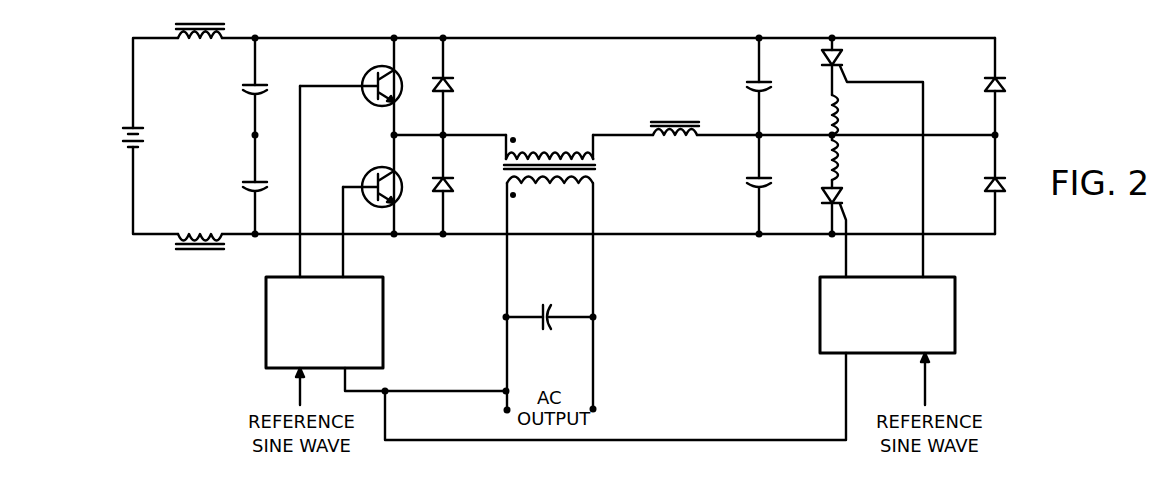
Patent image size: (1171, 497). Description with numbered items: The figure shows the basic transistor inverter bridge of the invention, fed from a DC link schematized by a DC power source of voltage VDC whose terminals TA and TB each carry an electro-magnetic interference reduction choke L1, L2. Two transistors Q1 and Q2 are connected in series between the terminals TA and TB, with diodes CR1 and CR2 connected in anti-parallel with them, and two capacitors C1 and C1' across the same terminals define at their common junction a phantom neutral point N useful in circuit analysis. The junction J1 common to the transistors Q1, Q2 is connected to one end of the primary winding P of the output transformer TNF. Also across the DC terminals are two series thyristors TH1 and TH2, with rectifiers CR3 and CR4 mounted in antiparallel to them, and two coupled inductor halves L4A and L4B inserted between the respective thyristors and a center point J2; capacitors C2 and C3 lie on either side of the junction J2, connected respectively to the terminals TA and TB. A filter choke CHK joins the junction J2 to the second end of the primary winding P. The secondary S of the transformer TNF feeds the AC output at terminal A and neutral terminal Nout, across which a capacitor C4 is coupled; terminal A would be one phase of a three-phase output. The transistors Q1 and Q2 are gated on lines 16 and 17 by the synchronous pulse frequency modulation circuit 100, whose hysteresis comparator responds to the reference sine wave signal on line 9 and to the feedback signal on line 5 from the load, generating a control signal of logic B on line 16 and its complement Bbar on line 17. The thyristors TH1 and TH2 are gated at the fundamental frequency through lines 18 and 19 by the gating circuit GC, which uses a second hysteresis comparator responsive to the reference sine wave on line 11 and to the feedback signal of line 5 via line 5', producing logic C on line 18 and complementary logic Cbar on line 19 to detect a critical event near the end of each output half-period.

The DC link voltage VDC is at (144, 135).
The electro-magnetic interference reduction choke L1 is at (200, 44).
The electro-magnetic interference reduction choke L2 is at (197, 231).
The capacitor C1 is at (236, 78).
The capacitor C1' is at (236, 176).
The DC link terminal TA is at (257, 36).
The DC link terminal TB is at (255, 236).
The phantom neutral point N is at (253, 135).
The transistor Q1 is at (368, 74).
The transistor Q2 is at (374, 174).
The gating line 16 is at (302, 86).
The gating line 17 is at (343, 184).
The control signal logic B is at (312, 101).
The complementary control signal logic B-bar Bbar is at (340, 190).
The junction J1 is at (392, 136).
The diode CR1 is at (451, 83).
The diode CR2 is at (450, 182).
The output transformer TNF is at (594, 170).
The primary winding P is at (545, 146).
The secondary winding S is at (546, 184).
The filter choke CHK is at (672, 139).
The center point J2 is at (757, 134).
The capacitor C2 is at (747, 92).
The capacitor C3 is at (747, 188).
The coupled inductor half L4A is at (826, 120).
The coupled inductor half L4B is at (826, 148).
The thyristor TH1 is at (841, 62).
The thyristor TH2 is at (843, 195).
The complementary control signal logic C-bar Cbar is at (916, 64).
The control signal logic C is at (856, 215).
The rectifier CR3 is at (982, 86).
The rectifier CR4 is at (982, 186).
The gating line 18 is at (844, 262).
The gating line 19 is at (924, 257).
The synchronous pulse frequency modulation circuit 100 is at (368, 277).
The gating circuit GC is at (952, 277).
The feedback signal line 5 is at (398, 374).
The reference sine wave line 9 is at (298, 398).
The feedback line 5' is at (824, 379).
The reference sine wave line 11 is at (926, 383).
The output terminal A is at (505, 410).
The neutral output terminal Nout is at (596, 408).
The capacitor C4 is at (541, 308).